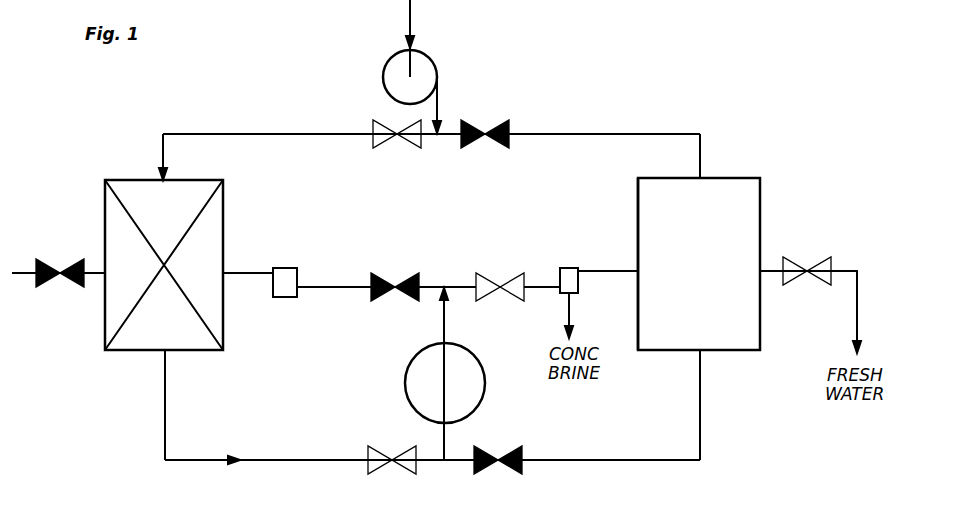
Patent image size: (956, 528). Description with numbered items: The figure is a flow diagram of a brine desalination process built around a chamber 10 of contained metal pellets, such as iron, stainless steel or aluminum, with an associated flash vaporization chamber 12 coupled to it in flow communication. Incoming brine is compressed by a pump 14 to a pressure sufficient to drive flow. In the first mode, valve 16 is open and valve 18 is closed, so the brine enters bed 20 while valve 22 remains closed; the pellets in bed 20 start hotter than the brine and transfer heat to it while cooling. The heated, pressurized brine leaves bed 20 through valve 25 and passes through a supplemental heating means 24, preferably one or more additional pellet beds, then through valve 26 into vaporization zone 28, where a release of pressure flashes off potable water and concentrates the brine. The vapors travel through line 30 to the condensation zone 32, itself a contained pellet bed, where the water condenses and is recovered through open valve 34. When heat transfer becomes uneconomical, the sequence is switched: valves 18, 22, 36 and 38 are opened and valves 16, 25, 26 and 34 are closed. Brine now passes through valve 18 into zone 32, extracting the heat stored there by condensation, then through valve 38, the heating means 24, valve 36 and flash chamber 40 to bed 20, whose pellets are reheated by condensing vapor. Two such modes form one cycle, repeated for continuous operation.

The chamber of contained pellets 10 is at (205, 181).
The flash vaporization chamber 12 is at (296, 262).
The pump 14 is at (435, 63).
The valve 16 is at (397, 135).
The valve 18 is at (485, 133).
The bed 20 is at (223, 215).
The valve 22 is at (60, 270).
The supplemental heating means 24 is at (488, 426).
The valve 25 is at (392, 462).
The valve 26 is at (500, 285).
The vaporization zone 28 is at (578, 288).
The line 30 is at (612, 270).
The condensation zone 32 is at (760, 212).
The valve 34 is at (807, 270).
The valve 36 is at (395, 285).
The valve 38 is at (498, 462).
The flash chamber 40 is at (297, 279).